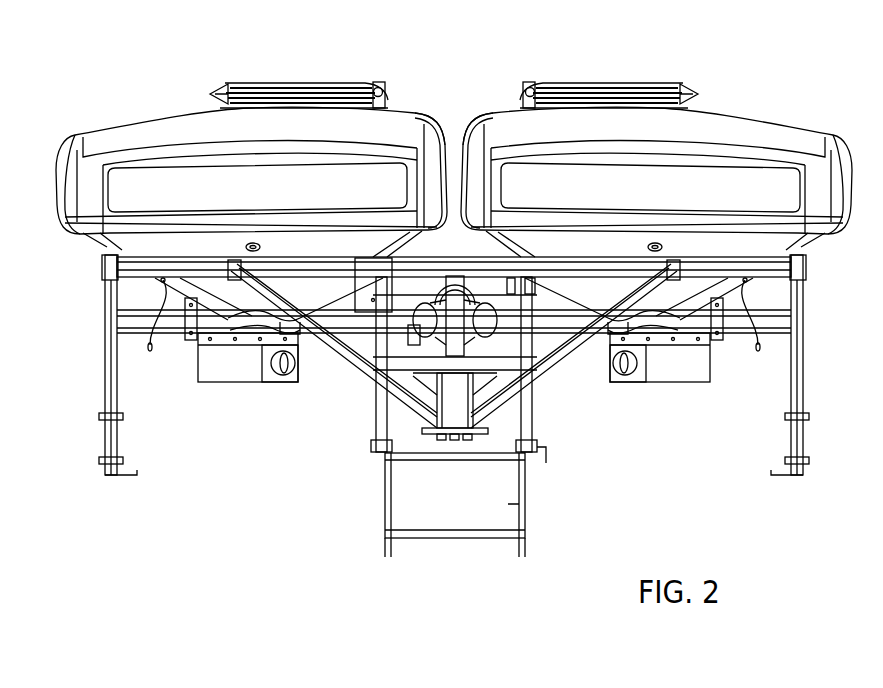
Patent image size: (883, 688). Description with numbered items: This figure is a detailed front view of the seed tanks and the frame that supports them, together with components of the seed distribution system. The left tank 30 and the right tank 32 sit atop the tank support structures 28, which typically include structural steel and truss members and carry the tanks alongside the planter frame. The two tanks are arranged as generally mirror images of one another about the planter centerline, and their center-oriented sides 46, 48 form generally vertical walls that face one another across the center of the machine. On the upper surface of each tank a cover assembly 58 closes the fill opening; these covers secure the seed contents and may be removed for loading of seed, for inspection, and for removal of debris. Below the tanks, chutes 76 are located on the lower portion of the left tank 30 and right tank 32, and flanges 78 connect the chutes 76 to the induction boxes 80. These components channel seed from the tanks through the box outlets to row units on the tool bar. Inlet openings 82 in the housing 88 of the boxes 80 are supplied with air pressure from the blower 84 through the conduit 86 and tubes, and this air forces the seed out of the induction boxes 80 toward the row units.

The tank support structures 28 is at (800, 262).
The left tank 30 is at (745, 128).
The right tank 32 is at (150, 128).
The center-oriented side 46 is at (477, 125).
The center-oriented side 48 is at (428, 128).
The cover assembly 58 is at (305, 83).
The chute 76 is at (228, 297).
The flange 78 is at (298, 336).
The induction box 80 is at (232, 382).
The inlet opening 82 is at (292, 365).
The blower 84 is at (527, 317).
The conduit 86 is at (432, 328).
The housing 88 is at (282, 382).